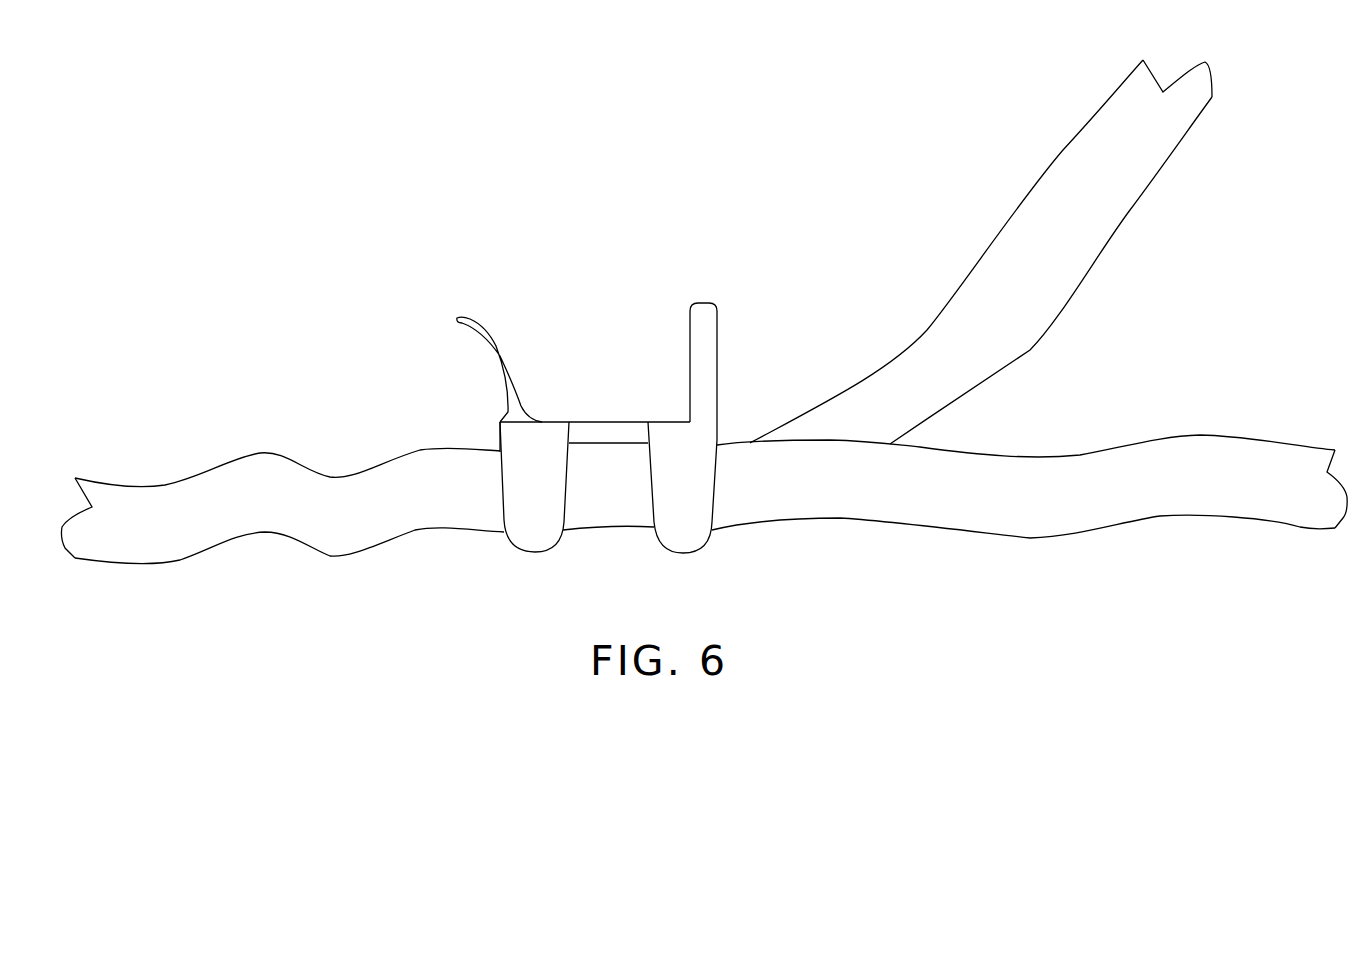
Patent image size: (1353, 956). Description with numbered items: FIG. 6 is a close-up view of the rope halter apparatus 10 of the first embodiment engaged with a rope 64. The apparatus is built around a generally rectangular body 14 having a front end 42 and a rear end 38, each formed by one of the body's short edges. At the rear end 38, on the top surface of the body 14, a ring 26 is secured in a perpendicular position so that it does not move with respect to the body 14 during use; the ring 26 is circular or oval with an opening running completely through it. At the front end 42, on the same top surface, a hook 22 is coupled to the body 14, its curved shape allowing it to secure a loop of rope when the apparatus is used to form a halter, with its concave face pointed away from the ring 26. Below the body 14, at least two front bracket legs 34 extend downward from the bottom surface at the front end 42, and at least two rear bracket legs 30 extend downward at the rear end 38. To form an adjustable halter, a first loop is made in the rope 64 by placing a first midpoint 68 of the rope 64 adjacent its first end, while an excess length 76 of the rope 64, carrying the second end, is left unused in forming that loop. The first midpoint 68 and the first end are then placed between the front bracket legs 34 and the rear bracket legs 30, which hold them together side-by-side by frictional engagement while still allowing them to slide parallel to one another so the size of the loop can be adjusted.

The rope halter apparatus 10 is at (848, 216).
The body 14 is at (587, 421).
The hook 22 is at (460, 318).
The ring 26 is at (710, 330).
The rear bracket legs 30 is at (688, 537).
The front bracket legs 34 is at (530, 537).
The rear end 38 is at (718, 408).
The front end 42 is at (497, 424).
The rope 64 is at (922, 515).
The first midpoint 68 is at (607, 518).
The excess length 76 is at (300, 532).